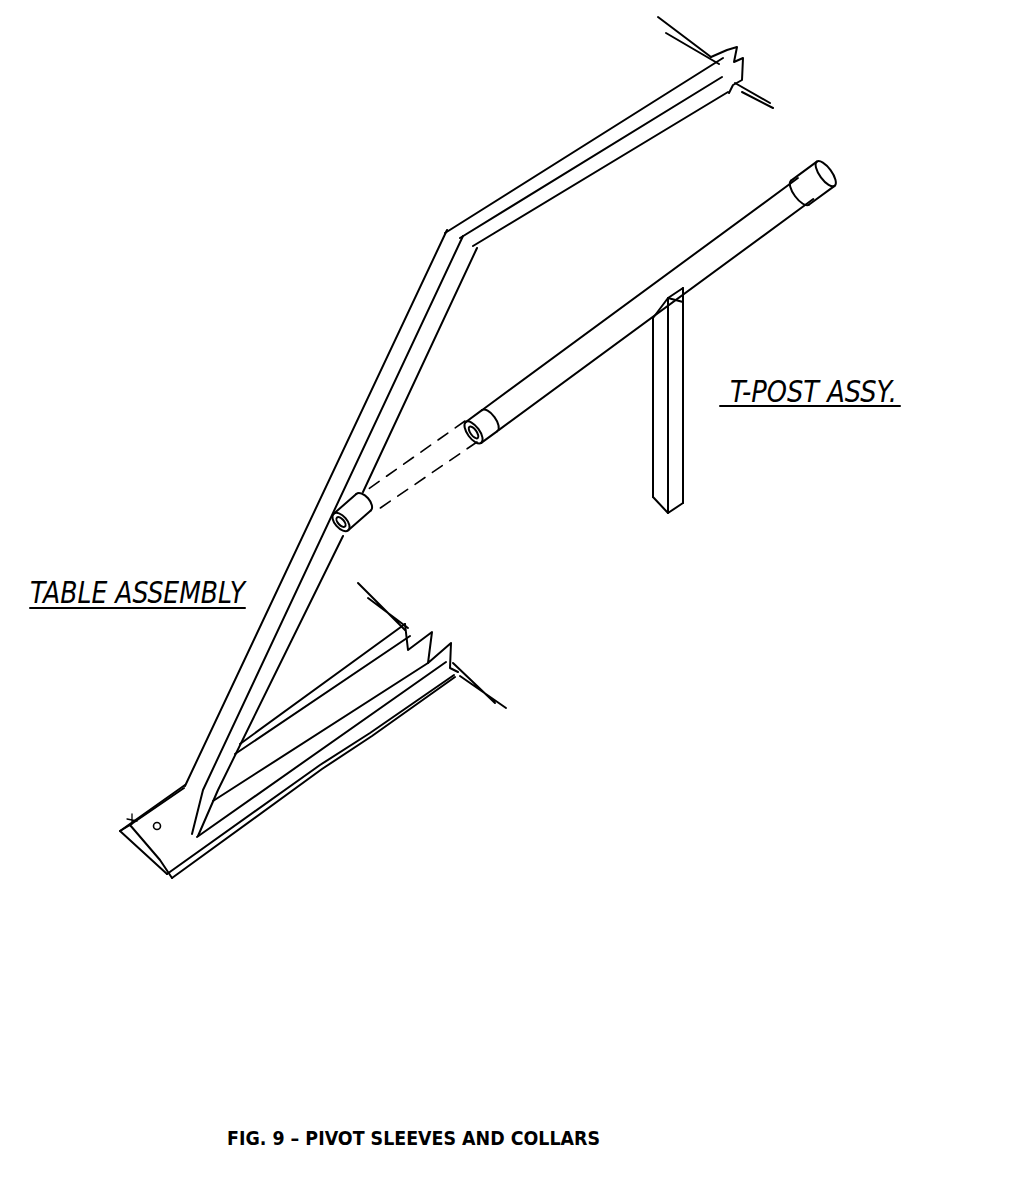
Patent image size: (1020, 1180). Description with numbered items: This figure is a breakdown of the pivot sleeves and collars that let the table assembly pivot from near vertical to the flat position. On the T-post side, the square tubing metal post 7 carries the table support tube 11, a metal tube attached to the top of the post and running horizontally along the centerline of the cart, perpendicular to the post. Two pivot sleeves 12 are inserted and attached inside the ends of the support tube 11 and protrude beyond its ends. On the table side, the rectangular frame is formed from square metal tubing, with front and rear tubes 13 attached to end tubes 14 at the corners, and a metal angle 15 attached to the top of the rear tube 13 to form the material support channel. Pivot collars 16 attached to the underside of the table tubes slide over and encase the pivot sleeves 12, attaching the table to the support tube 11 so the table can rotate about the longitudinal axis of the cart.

The post 7 is at (675, 437).
The table support tube 11 is at (722, 245).
The pivot sleeve 12 is at (818, 175).
The front and rear tubes 13 is at (607, 140).
The end tubes 14 is at (388, 373).
The metal angle 15 is at (157, 829).
The pivot collar 16 is at (358, 512).